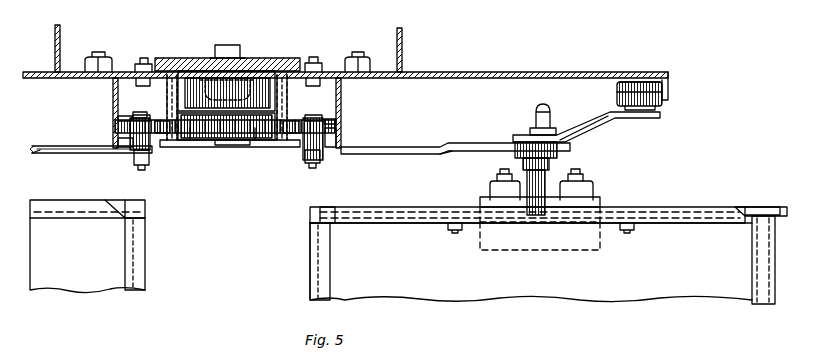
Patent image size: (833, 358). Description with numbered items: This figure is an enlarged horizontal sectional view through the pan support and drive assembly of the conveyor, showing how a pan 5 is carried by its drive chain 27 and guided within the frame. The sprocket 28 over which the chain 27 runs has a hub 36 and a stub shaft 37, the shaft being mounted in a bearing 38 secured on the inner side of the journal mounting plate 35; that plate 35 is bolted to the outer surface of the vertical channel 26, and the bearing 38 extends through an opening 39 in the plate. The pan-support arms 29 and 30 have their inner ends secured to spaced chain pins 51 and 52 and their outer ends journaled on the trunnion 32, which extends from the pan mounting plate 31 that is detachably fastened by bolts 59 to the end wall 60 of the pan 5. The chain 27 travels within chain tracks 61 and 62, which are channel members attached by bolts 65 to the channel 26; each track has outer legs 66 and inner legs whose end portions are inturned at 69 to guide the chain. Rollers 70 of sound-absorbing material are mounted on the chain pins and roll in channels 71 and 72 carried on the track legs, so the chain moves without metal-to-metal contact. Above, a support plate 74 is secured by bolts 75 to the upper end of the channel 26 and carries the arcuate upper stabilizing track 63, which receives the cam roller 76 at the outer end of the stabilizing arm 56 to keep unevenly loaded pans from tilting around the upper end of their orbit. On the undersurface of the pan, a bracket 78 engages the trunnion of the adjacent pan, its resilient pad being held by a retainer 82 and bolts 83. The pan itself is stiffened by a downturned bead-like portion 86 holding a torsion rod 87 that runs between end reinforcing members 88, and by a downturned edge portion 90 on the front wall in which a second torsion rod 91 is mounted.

The pan 5 is at (110, 291).
The vertical channel 26 is at (402, 40).
The drive chain 27 is at (140, 115).
The sprocket 28 is at (258, 147).
The pan-support arm 29 is at (42, 146).
The pan-support arm 30 is at (40, 153).
The pan mounting plate 31 is at (640, 207).
The trunnion 32 is at (538, 215).
The journal mounting plate 35 is at (179, 58).
The hub 36 is at (196, 147).
The stub shaft 37 is at (225, 147).
The bearing 38 is at (255, 78).
The opening 39 is at (268, 80).
The chain pin 51 is at (311, 168).
The chain pin 52 is at (140, 170).
The stabilizing arm 56 is at (600, 136).
The bolt 59 is at (453, 230).
The end wall 60 is at (67, 218).
The chain track 61 is at (113, 106).
The chain track 62 is at (341, 104).
The upper stabilizing track 63 is at (617, 94).
The bolt 65 is at (143, 58).
The outer leg 66 is at (118, 140).
The inturned portion 69 is at (172, 95).
The roller 70 is at (135, 140).
The channel 71 is at (118, 118).
The channel 72 is at (163, 135).
The support plate 74 is at (498, 72).
The bolt 75 is at (97, 52).
The cam roller 76 is at (635, 88).
The bracket 78 is at (614, 203).
The retainer 82 is at (593, 188).
The bolt 83 is at (497, 172).
The bead-like portion 86 is at (775, 249).
The torsion rod 87 is at (777, 283).
The end reinforcing member 88 is at (770, 207).
The downturned edge portion 90 is at (145, 262).
The torsion rod 91 is at (140, 212).